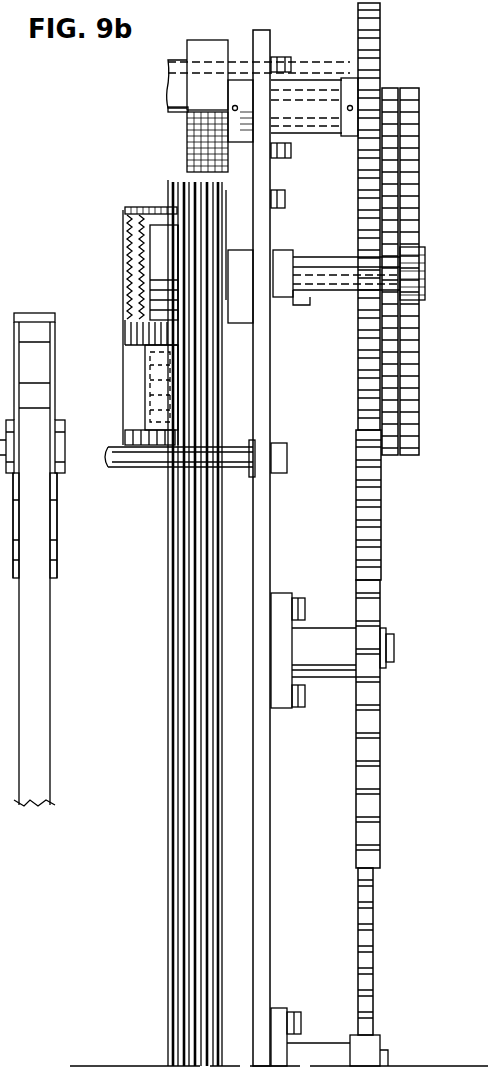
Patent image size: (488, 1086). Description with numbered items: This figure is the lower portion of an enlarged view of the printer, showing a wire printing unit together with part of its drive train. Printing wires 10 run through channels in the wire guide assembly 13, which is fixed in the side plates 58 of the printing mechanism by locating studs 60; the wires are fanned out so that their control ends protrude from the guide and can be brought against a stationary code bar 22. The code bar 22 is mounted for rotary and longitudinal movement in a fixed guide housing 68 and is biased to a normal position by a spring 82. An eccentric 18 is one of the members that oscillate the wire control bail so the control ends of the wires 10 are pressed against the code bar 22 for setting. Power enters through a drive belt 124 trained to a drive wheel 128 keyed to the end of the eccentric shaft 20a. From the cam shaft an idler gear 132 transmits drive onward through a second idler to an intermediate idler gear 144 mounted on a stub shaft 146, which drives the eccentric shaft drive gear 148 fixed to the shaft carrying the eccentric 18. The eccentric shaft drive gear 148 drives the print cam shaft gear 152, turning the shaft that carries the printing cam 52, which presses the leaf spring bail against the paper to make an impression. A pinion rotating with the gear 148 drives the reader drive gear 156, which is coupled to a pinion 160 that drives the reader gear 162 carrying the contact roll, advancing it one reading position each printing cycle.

The printing cam 52 is at (200, 54).
The print cam shaft gear 152 is at (364, 34).
The reader drive gear 156 is at (388, 88).
The reader gear 162 is at (405, 90).
The spring 82 is at (125, 232).
The eccentric 18 is at (165, 262).
The code bar 22 is at (125, 332).
The guide housing 68 is at (165, 372).
The printing wires 10 is at (170, 372).
The eccentric shaft 20a is at (68, 442).
The locating studs 60 is at (158, 458).
The drive wheel 128 is at (56, 532).
The drive belt 124 is at (46, 606).
The wire guide assembly 13 is at (176, 585).
The pinion 160 is at (400, 292).
The eccentric shaft drive gear 148 is at (366, 350).
The stub shaft 146 is at (388, 645).
The intermediate idler gear 144 is at (358, 740).
The side plates 58 is at (266, 858).
The idler gear 132 is at (364, 927).